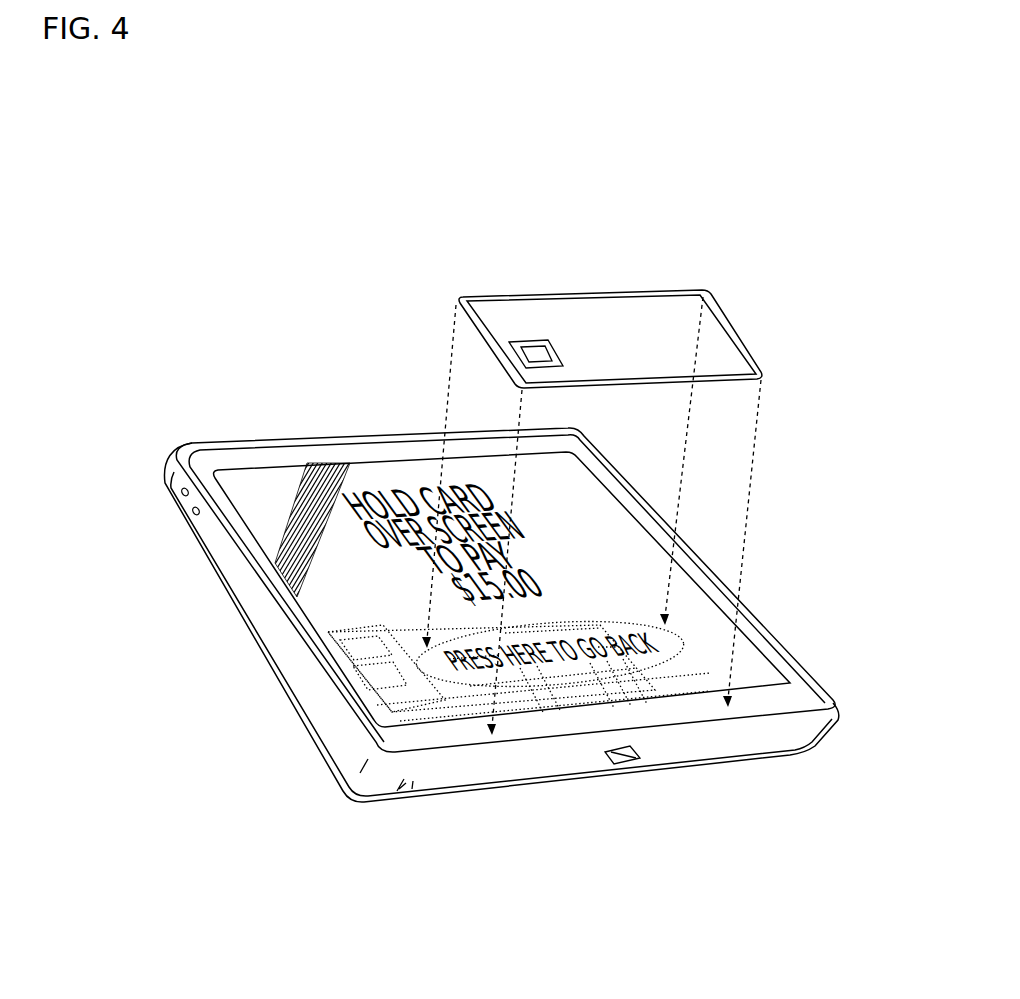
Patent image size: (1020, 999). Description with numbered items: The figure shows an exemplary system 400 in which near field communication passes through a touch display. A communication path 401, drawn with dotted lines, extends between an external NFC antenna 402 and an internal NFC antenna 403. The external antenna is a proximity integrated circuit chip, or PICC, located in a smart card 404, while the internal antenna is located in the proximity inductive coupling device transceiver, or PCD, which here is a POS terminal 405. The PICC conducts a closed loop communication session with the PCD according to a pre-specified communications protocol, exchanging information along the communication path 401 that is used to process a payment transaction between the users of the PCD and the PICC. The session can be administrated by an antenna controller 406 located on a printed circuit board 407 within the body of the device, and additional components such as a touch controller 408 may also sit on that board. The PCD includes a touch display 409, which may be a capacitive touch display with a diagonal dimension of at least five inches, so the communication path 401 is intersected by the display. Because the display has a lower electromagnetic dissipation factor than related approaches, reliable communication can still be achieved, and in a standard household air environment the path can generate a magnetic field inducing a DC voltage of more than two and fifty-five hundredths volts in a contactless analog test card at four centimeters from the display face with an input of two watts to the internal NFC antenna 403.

The system 400 is at (108, 85).
The communication path 401 is at (650, 438).
The external NFC antenna 402 is at (533, 348).
The internal NFC antenna 403 is at (573, 722).
The smart card 404 is at (487, 316).
The PCD transceiver 405 is at (165, 483).
The antenna controller 406 is at (367, 683).
The printed circuit board 407 is at (358, 643).
The touch controller 408 is at (348, 655).
The touch display 409 is at (266, 470).